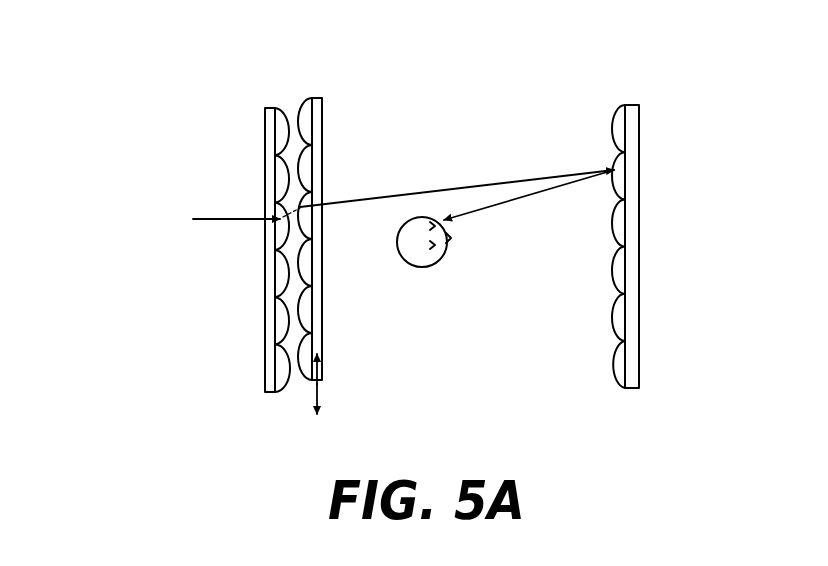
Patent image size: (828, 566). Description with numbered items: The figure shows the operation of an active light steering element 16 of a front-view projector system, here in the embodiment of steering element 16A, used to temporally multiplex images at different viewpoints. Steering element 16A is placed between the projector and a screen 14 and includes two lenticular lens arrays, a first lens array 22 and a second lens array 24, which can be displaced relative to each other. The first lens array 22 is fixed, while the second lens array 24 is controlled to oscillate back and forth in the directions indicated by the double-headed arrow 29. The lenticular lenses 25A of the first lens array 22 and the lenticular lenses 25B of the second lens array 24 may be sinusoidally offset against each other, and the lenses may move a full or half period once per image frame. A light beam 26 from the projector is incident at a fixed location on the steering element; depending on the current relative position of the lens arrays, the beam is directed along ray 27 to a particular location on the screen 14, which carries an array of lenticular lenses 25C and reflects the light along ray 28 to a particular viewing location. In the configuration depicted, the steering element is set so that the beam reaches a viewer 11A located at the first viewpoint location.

The active light steering element 16 is at (277, 201).
The active light steering element 16A is at (287, 79).
The first lens array 22 is at (265, 140).
The second lens array 24 is at (322, 128).
The lenticular lenses 25A is at (280, 323).
The lenticular lenses 25B is at (307, 175).
The lenticular lenses 25C is at (620, 366).
The light beam 26 is at (223, 218).
The ray 27 is at (466, 184).
The ray 28 is at (497, 203).
The double-headed arrow 29 is at (320, 386).
The screen 14 is at (639, 220).
The viewer 11A is at (418, 267).